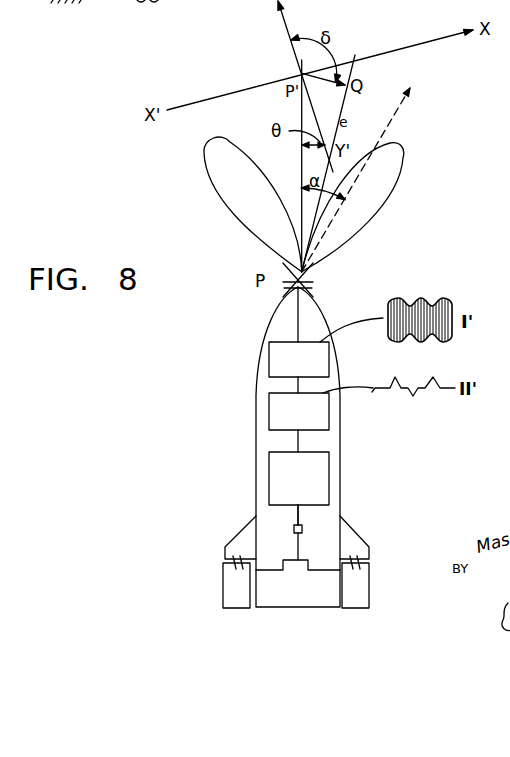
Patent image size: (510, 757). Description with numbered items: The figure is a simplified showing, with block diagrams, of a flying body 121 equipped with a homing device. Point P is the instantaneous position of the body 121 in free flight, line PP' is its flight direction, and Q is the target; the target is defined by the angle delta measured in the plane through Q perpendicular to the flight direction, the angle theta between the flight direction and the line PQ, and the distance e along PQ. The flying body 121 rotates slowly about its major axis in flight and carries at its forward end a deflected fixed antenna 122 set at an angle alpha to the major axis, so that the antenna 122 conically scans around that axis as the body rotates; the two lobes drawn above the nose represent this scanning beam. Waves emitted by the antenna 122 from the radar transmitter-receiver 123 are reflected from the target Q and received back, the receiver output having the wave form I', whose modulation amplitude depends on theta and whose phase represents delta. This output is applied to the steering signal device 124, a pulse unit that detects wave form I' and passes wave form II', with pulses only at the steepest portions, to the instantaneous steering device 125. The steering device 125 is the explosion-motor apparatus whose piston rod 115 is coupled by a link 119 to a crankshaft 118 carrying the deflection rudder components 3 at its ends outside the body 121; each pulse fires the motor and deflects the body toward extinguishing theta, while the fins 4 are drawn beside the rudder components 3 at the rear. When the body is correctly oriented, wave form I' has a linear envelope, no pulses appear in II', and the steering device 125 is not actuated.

The deflection rudder components 3 is at (232, 584).
The fin 4 is at (243, 541).
The piston rod 115 is at (296, 511).
The crankshaft 118 is at (287, 563).
The link 119 is at (299, 547).
The flying body 121 is at (340, 428).
The fixed antenna 122 is at (313, 275).
The radar transmitter-receiver 123 is at (269, 360).
The steering signal device 124 is at (269, 415).
The instantaneous steering device 125 is at (269, 473).